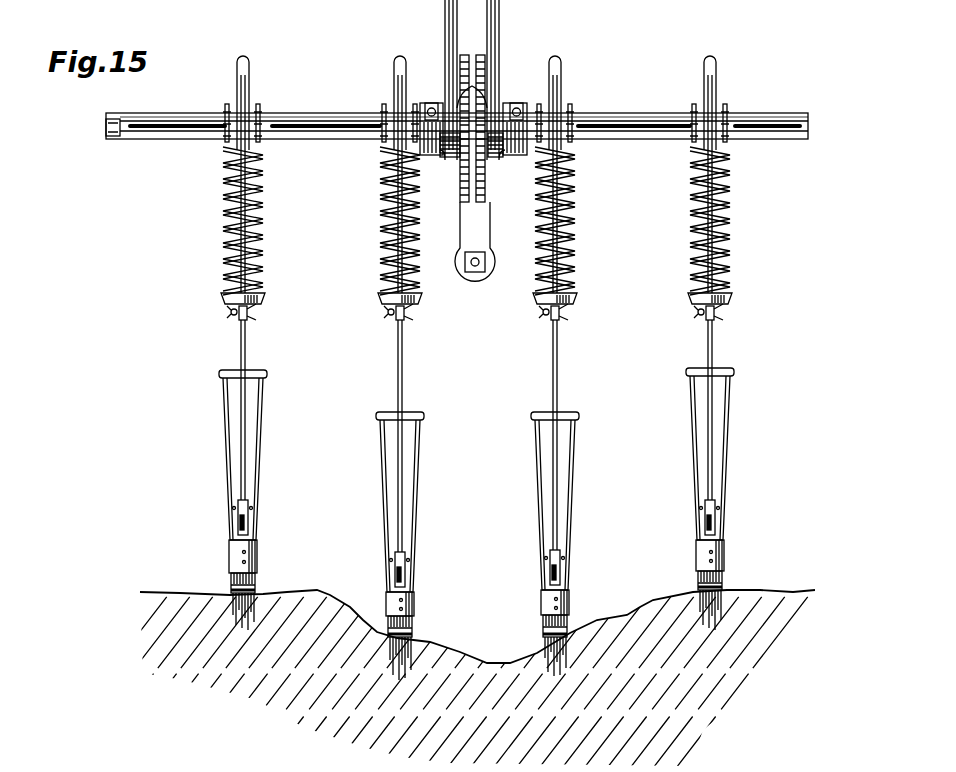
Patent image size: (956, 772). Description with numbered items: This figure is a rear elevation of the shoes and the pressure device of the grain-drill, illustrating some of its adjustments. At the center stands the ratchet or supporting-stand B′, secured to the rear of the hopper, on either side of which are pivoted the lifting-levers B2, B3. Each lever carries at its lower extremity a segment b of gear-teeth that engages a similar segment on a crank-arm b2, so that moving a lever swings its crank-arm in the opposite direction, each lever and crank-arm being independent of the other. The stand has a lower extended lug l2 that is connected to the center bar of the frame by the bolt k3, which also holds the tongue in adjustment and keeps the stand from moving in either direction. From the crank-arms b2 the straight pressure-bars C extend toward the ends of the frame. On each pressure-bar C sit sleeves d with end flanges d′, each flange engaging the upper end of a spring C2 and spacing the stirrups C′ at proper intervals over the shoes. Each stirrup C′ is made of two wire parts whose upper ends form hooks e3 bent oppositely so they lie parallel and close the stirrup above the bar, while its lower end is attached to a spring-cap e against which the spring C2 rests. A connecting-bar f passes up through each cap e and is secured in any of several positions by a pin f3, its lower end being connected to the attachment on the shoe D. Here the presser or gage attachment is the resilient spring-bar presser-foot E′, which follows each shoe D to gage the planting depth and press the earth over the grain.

The sleeve d is at (180, 113).
The pressure-bar C is at (108, 142).
The hook e3 is at (249, 74).
The collar or flange d′ is at (226, 104).
The stirrup C′ is at (445, 221).
The spring C2 is at (265, 240).
The spring-cap e is at (266, 298).
The pin f3 is at (699, 312).
The connecting rod or bar f is at (248, 356).
The shoe D is at (483, 480).
The spring-bar presser-foot E′ is at (258, 560).
The lifting-lever B2 is at (445, 32).
The lifting-lever B3 is at (499, 40).
The crank-arm b2 is at (518, 162).
The segment of gear-teeth b is at (494, 160).
The ratchet or supporting-stand B′ is at (462, 174).
The lower extended lug l2 is at (490, 266).
The bolt k3 is at (474, 266).